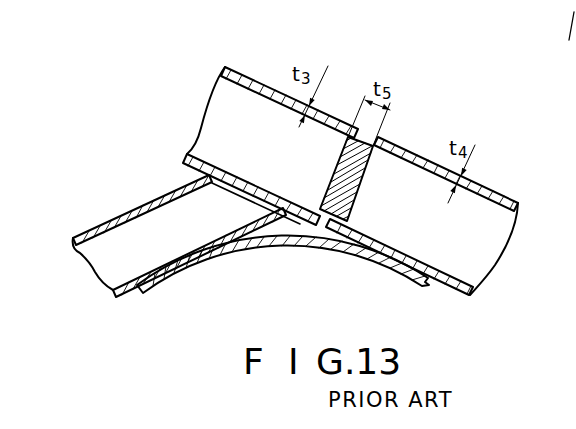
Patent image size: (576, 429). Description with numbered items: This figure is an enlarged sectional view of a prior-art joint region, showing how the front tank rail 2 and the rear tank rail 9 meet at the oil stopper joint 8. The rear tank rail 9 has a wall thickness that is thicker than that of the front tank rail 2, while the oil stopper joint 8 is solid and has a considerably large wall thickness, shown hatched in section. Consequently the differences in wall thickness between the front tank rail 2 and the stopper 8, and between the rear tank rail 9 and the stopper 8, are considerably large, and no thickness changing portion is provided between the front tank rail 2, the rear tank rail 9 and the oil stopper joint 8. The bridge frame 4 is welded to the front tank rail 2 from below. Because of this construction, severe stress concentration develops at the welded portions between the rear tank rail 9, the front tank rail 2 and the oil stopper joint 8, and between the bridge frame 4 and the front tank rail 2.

The front tank rail 2 is at (250, 76).
The bridge frame 4 is at (120, 218).
The oil stopper joint 8 is at (392, 151).
The rear tank rail 9 is at (487, 190).